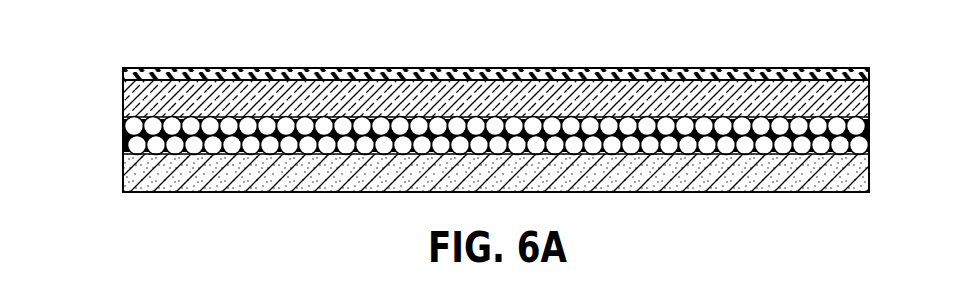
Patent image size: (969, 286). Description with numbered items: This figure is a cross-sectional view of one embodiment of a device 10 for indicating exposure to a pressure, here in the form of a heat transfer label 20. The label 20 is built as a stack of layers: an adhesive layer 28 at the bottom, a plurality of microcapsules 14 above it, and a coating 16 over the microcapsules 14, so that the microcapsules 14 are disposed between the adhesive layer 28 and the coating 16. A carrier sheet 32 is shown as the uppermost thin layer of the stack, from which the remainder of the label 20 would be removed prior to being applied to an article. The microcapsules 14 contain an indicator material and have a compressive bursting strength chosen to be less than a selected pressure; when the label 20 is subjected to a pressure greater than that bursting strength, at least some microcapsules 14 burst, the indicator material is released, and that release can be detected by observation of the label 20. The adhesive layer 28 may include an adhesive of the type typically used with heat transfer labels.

The device 10 is at (240, 49).
The label 20 is at (59, 193).
The carrier sheet 32 is at (134, 75).
The coating 16 is at (862, 98).
The microcapsules 14 is at (113, 155).
The adhesive layer 28 is at (863, 168).